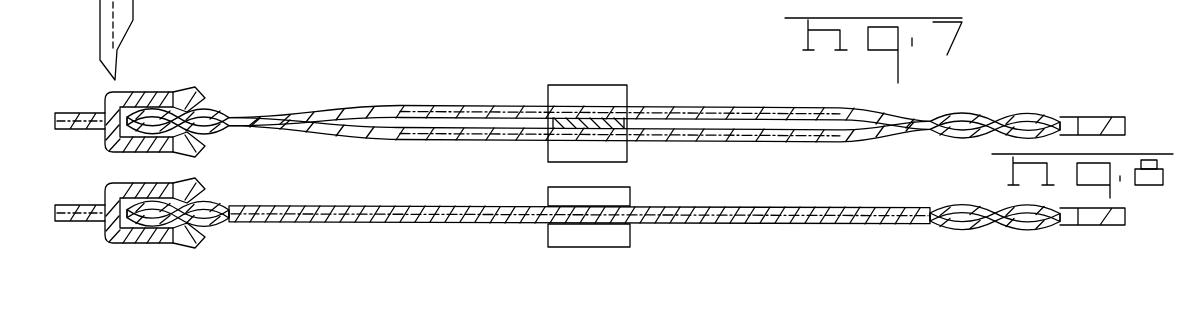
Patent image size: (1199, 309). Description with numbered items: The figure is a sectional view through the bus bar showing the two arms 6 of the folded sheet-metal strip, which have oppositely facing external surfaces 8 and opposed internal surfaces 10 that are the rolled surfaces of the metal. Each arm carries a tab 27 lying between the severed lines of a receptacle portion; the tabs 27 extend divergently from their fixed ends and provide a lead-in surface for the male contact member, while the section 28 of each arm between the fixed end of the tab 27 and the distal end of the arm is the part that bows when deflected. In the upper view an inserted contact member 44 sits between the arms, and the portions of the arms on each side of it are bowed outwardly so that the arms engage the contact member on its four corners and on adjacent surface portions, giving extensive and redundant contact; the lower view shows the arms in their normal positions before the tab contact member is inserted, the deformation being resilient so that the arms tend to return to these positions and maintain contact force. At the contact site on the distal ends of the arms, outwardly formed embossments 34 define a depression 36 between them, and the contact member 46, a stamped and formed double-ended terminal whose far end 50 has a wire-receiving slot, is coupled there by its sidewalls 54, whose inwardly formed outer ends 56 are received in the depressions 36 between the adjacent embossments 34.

In FIG. 8, the arms 6 is at (463, 223).
In FIG. 7, the external surfaces 8 is at (470, 137).
In FIG. 7, the internal surfaces 10 is at (520, 50).
In FIG. 7, the tab 27 is at (588, 86).
In FIG. 8, the tab 27 is at (590, 240).
In FIG. 7, the section 28 is at (610, 108).
In FIG. 8, the section 28 is at (595, 207).
In FIG. 7, the embossments 34 is at (962, 110).
In FIG. 8, the embossments 34 is at (963, 232).
In FIG. 7, the depression 36 is at (995, 135).
In FIG. 8, the depression 36 is at (993, 233).
In FIG. 7, the inserted contact member 44 is at (620, 125).
In FIG. 7, the contact member 46 is at (165, 82).
In FIG. 8, the contact member 46 is at (172, 252).
In FIG. 7, the end of contact member 50 is at (92, 40).
In FIG. 7, the sidewalls 54 is at (170, 100).
In FIG. 7, the outer ends of sidewalls 56 is at (185, 148).